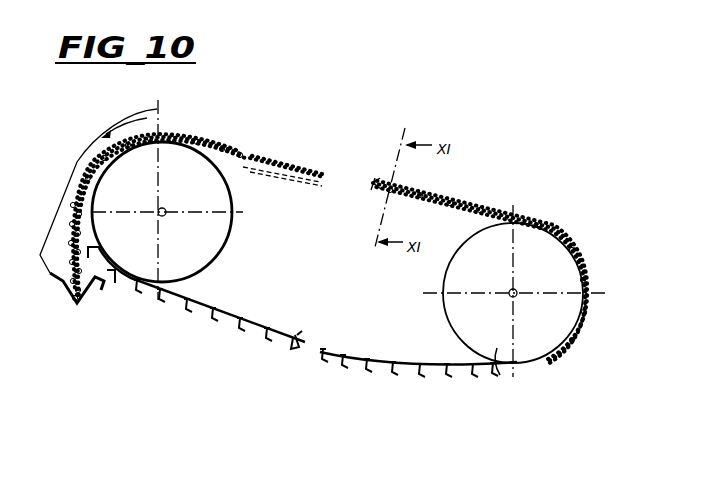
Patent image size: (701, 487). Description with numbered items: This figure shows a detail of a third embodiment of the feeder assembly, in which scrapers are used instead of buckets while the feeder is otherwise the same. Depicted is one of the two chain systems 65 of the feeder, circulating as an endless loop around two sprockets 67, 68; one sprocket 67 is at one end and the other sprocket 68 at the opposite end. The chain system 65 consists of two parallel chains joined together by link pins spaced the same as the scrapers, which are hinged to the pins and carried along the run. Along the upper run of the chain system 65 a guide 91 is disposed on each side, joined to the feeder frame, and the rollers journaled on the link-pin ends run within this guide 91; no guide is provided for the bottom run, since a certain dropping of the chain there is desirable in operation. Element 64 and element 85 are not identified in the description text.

The housing / hopper wall 64 is at (62, 214).
The chain system 65 is at (215, 314).
The sprocket 67 is at (186, 155).
The sprocket 68 is at (498, 350).
The chain flights 85 is at (394, 366).
The guide 91 is at (276, 158).